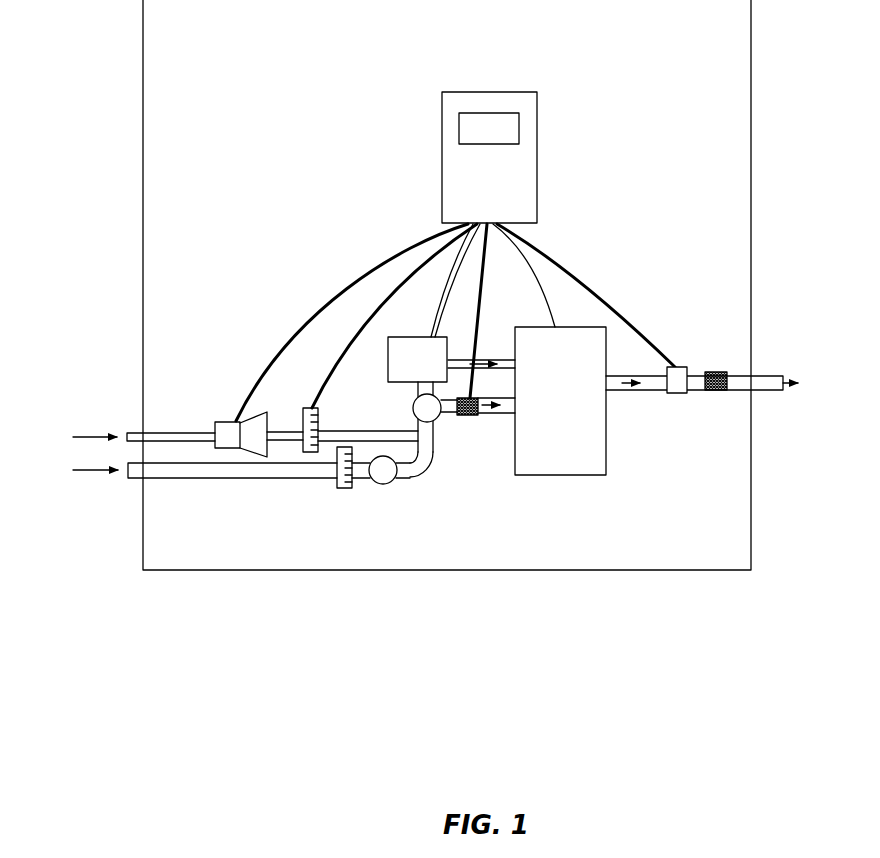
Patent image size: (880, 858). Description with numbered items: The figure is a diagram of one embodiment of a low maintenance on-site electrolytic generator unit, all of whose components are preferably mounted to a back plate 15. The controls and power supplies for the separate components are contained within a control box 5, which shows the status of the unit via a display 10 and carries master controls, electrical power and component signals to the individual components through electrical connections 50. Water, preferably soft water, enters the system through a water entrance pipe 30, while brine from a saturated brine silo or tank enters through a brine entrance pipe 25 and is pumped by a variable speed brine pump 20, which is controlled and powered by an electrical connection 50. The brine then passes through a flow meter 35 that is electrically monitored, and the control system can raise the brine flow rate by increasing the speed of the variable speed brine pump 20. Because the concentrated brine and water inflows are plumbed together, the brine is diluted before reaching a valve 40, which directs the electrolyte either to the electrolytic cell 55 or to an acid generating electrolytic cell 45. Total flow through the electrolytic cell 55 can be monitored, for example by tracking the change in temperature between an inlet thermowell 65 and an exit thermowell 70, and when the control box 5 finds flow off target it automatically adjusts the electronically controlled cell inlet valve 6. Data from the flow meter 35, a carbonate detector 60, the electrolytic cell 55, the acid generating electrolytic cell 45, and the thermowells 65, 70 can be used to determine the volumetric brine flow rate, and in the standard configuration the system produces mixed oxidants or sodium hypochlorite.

The control box 5 is at (442, 92).
The display 10 is at (537, 97).
The back plate 15 is at (155, 182).
The variable speed brine pump 20 is at (225, 432).
The brine entrance pipe 25 is at (190, 437).
The water entrance pipe 30 is at (248, 472).
The flow meter 35 is at (338, 453).
The valve 40 is at (430, 405).
The electronically controlled cell inlet valve 6 is at (388, 467).
The acid generating electrolytic cell 45 is at (402, 355).
The electrical connections 50 is at (560, 252).
The electrolytic cell 55 is at (552, 428).
The carbonate detector 60 is at (677, 393).
The inlet thermowell 65 is at (467, 415).
The exit thermowell 70 is at (719, 372).